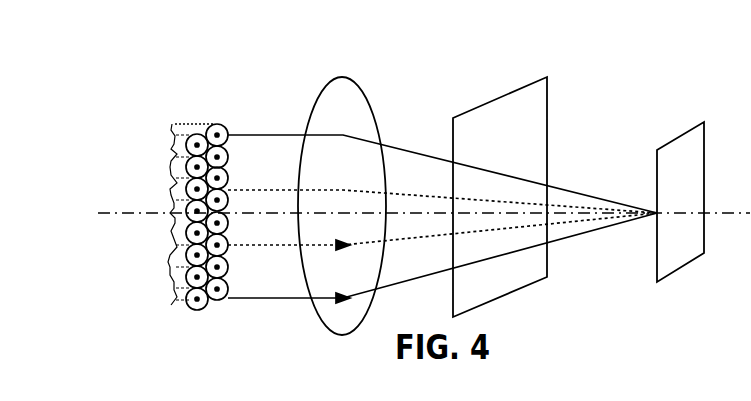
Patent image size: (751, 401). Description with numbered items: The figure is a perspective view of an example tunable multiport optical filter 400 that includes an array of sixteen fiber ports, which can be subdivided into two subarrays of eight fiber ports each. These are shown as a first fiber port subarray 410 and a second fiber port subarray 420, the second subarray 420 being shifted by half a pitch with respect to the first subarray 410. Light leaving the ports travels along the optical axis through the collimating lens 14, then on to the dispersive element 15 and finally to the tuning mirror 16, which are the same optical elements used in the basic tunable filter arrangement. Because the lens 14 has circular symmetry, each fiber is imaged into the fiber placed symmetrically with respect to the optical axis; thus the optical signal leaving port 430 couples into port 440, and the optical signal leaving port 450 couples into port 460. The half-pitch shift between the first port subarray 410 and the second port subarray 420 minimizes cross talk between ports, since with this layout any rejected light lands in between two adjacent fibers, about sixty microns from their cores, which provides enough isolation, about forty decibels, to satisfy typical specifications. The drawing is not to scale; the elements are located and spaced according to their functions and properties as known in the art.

The tunable multiport optical filter 400 is at (124, 62).
The first fiber port subarray 410 is at (191, 190).
The second fiber port subarray 420 is at (192, 192).
The port 430 is at (193, 304).
The port 440 is at (222, 130).
The port 450 is at (207, 245).
The port 460 is at (207, 181).
The collimating lens 14 is at (342, 77).
The dispersive element 15 is at (513, 88).
The tuning mirror 16 is at (703, 121).